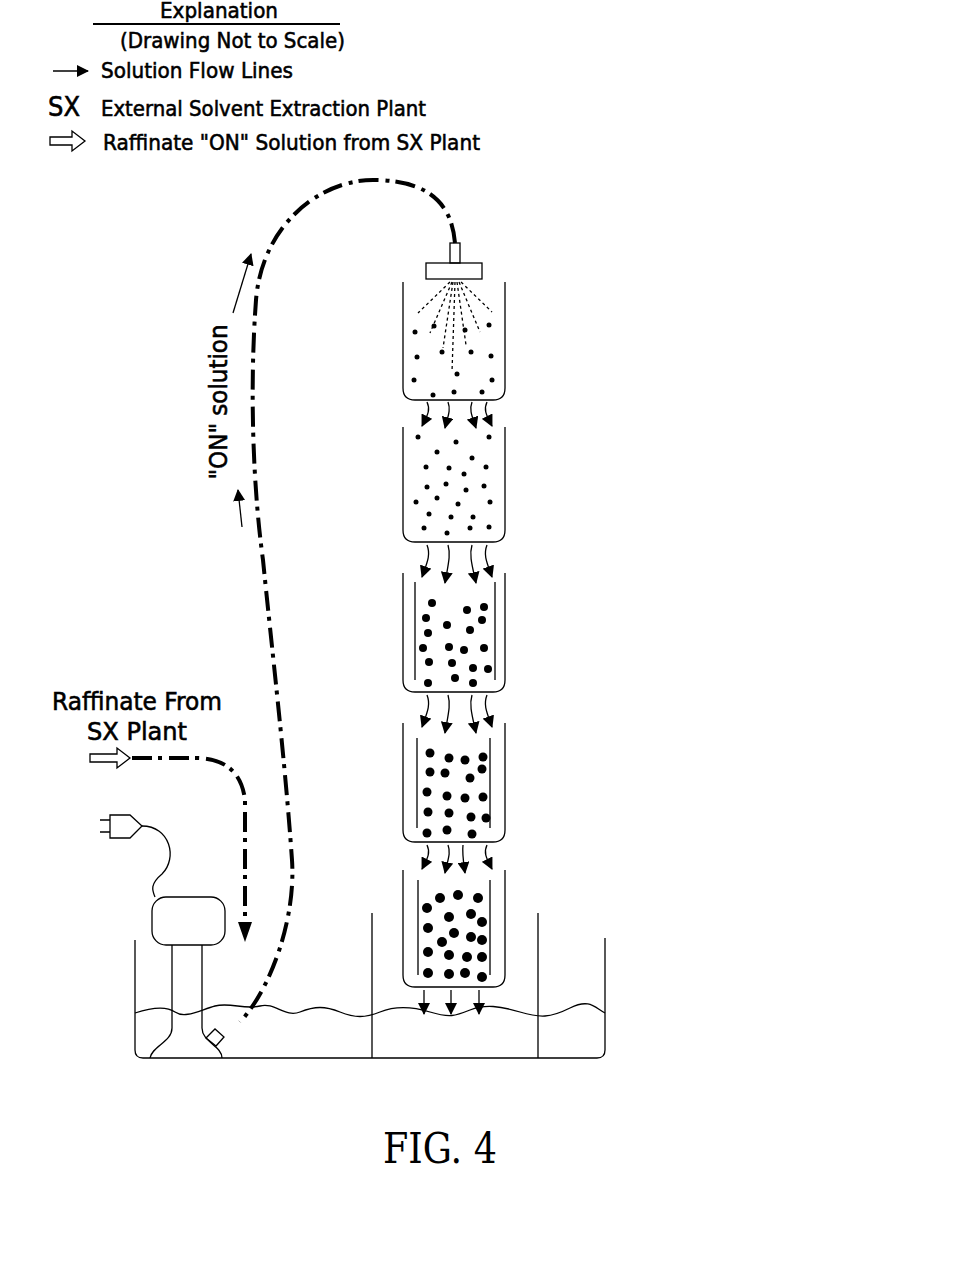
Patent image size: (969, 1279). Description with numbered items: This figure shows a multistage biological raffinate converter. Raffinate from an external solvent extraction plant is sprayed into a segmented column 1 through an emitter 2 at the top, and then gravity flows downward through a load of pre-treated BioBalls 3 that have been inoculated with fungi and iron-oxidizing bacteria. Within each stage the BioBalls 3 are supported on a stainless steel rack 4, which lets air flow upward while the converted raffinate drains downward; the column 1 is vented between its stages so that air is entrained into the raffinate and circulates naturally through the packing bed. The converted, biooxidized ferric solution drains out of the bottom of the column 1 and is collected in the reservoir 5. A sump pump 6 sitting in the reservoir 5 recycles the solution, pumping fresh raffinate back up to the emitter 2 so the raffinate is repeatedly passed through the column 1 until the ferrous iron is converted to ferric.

The column 1 is at (512, 336).
The emitter 2 is at (482, 262).
The pre-treated BIOBALLS 3 is at (474, 799).
The stainless steel rack 4 is at (480, 977).
The reservoir 5 is at (133, 999).
The sump pump 6 is at (105, 893).